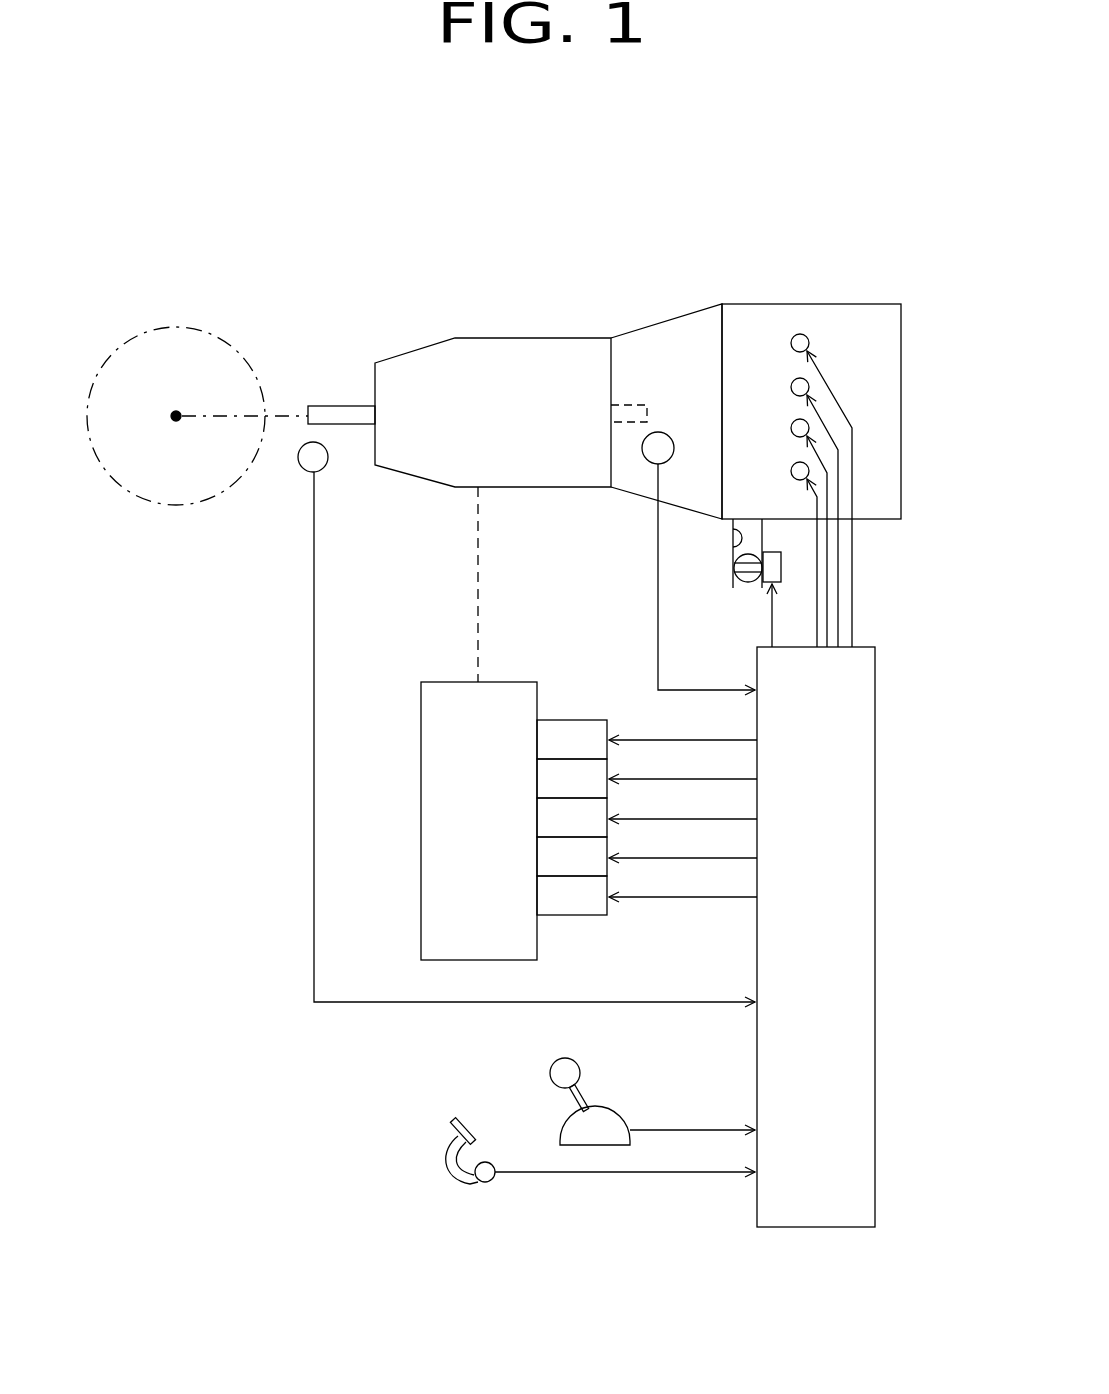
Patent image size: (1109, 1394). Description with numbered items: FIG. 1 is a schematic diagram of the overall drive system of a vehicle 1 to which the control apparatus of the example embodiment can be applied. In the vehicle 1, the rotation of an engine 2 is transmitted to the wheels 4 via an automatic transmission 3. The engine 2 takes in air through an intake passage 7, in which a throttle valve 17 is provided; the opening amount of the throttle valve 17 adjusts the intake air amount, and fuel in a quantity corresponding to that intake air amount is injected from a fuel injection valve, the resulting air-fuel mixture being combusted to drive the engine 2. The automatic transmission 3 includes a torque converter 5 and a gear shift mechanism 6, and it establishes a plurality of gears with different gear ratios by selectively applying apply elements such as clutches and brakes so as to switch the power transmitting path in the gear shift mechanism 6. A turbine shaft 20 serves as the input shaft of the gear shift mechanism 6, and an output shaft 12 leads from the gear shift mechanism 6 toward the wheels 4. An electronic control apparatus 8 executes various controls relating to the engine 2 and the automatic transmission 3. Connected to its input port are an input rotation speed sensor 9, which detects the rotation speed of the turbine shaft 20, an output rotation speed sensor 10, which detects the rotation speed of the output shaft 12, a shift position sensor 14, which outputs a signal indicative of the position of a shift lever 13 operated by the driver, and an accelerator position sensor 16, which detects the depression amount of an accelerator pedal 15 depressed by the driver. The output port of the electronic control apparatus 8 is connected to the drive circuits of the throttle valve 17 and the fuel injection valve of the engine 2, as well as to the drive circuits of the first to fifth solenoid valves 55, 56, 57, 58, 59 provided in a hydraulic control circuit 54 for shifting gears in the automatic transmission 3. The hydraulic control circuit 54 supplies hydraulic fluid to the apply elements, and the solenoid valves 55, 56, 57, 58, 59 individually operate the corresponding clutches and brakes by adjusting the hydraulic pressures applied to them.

The vehicle 1 is at (548, 360).
The engine 2 is at (811, 439).
The automatic transmission 3 is at (548, 370).
The wheels 4 is at (212, 330).
The torque converter 5 is at (666, 392).
The gear shift mechanism 6 is at (583, 338).
The intake passage 7 is at (733, 543).
The electronic control apparatus 8 is at (875, 716).
The input rotation speed sensor 9 is at (673, 436).
The output rotation speed sensor 10 is at (325, 469).
The output shaft 12 is at (345, 406).
The shift lever 13 is at (579, 1065).
The shift position sensor 14 is at (614, 1113).
The accelerator pedal 15 is at (462, 1120).
The accelerator position sensor 16 is at (490, 1162).
The throttle valve 17 is at (748, 585).
The turbine shaft 20 is at (638, 405).
The hydraulic control circuit 54 is at (505, 682).
The first solenoid valve 55 is at (608, 728).
The second solenoid valve 56 is at (608, 767).
The third solenoid valve 57 is at (608, 806).
The fourth solenoid valve 58 is at (608, 845).
The fifth solenoid valve 59 is at (608, 884).